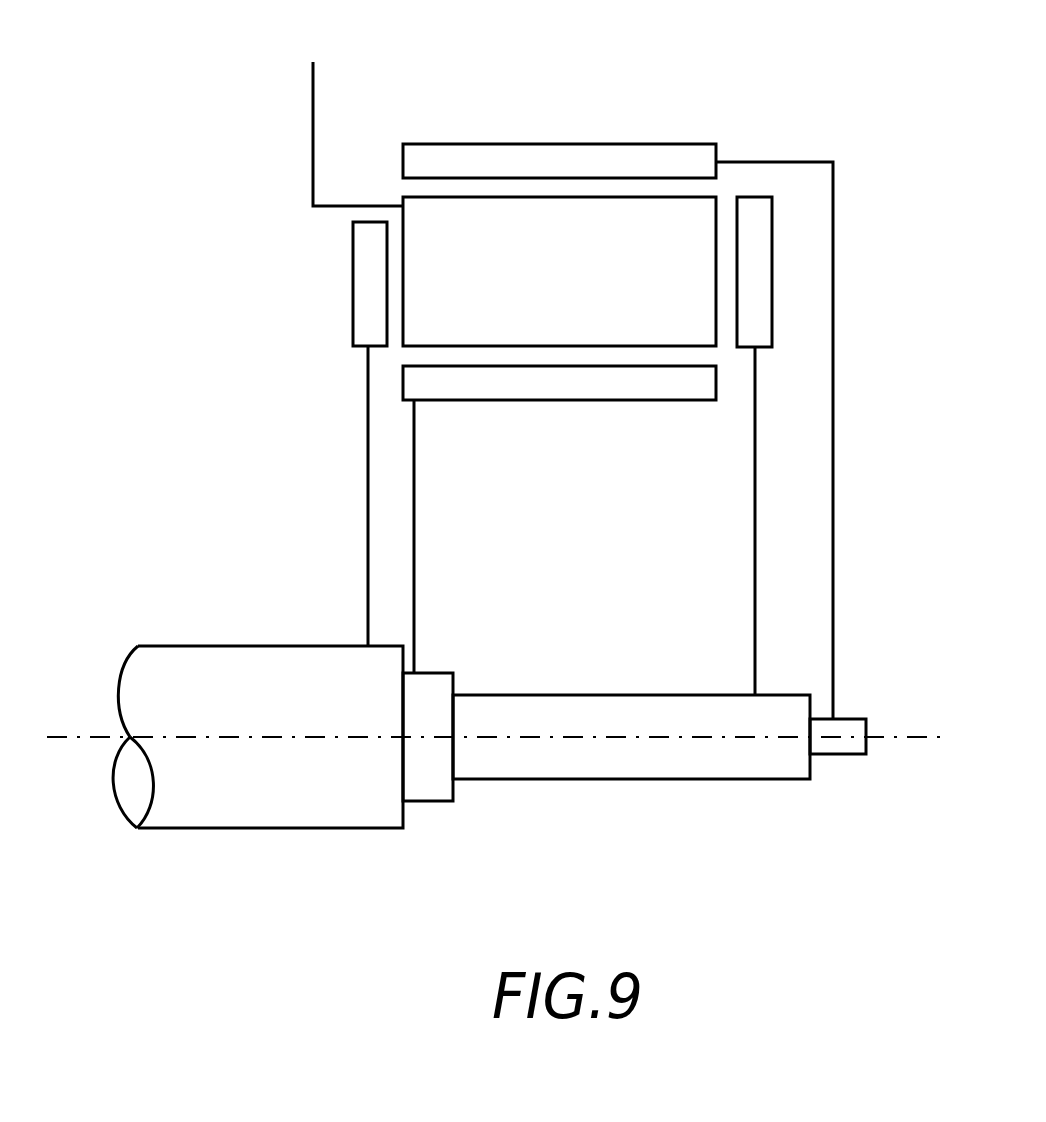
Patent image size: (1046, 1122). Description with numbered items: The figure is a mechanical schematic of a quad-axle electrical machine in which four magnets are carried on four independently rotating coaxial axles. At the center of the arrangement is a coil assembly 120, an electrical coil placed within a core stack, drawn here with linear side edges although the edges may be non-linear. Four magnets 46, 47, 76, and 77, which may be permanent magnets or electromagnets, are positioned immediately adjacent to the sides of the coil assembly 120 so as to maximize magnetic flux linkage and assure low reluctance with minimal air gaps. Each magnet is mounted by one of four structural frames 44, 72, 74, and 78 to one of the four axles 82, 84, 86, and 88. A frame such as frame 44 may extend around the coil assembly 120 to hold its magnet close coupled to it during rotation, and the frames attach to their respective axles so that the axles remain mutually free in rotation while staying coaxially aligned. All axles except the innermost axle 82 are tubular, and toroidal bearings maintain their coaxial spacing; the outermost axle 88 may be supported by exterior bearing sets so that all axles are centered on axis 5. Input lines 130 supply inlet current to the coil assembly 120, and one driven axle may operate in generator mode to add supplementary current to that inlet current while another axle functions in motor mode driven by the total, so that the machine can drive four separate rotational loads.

The axis 5 is at (892, 737).
The structural frame 44 is at (367, 460).
The magnet 46 is at (556, 160).
The magnet 47 is at (352, 262).
The frame 72 is at (415, 458).
The structural frame 74 is at (753, 530).
The magnet 76 is at (586, 400).
The magnet 77 is at (773, 262).
The frame 78 is at (835, 412).
The axle 82 is at (845, 755).
The axle 84 is at (682, 780).
The axle 86 is at (440, 803).
The axle 88 is at (263, 643).
The coil assembly 120 is at (682, 238).
The input lines 130 is at (313, 117).